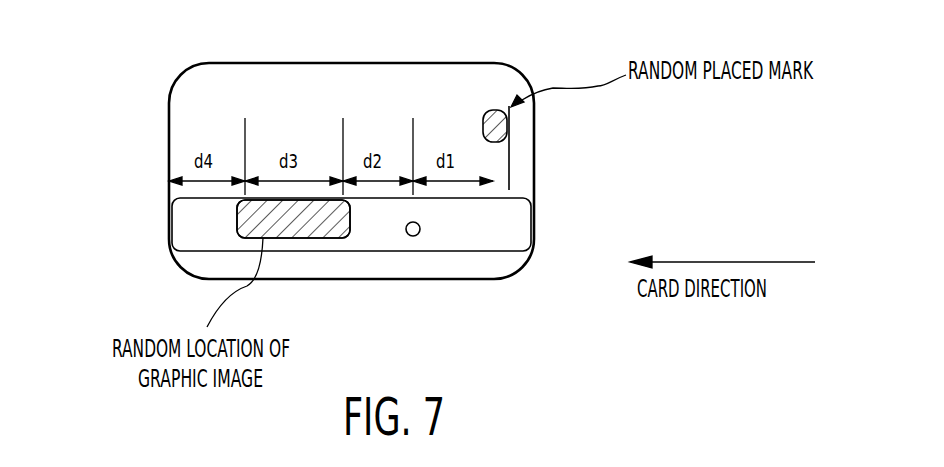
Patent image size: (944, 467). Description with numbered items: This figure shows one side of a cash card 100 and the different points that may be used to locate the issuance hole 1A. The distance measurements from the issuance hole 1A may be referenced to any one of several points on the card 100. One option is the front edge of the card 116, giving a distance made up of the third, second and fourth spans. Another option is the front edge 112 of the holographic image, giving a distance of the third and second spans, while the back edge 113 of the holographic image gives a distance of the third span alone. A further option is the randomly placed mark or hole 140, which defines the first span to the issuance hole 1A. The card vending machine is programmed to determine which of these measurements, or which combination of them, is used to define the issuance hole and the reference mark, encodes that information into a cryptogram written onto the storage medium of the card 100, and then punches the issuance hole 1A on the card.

The card 100 is at (202, 87).
The front edge of the holographic image 112 is at (237, 222).
The back edge of the holographic image 113 is at (350, 231).
The front edge of the card 116 is at (177, 228).
The randomly placed mark or hole 140 is at (494, 110).
The issuance hole 1A is at (415, 236).